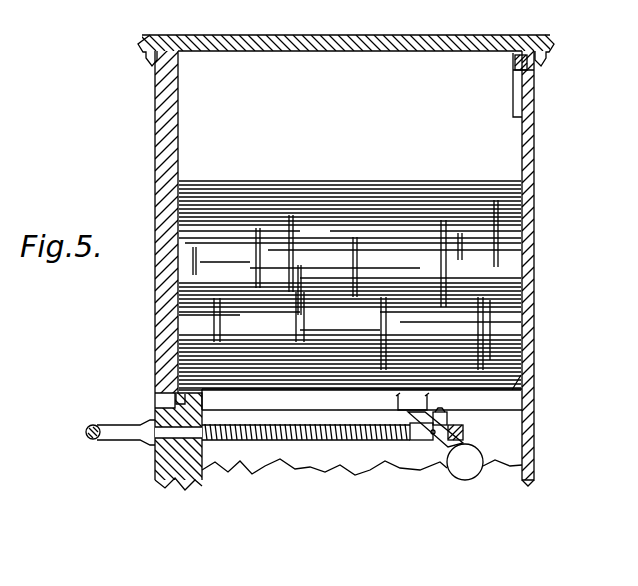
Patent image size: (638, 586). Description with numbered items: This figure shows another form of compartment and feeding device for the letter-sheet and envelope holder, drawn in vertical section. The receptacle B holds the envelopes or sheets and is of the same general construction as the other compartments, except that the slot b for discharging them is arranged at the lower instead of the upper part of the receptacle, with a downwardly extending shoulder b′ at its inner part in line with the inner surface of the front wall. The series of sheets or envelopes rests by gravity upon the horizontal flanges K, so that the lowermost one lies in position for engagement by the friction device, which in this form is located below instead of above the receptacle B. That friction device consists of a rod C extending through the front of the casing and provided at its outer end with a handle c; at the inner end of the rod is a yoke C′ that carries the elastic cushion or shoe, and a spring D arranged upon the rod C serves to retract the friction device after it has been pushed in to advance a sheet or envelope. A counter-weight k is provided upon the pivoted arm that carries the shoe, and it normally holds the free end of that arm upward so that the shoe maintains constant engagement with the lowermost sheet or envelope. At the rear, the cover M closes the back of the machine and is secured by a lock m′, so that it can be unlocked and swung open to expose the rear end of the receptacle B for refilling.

The receptacle B is at (346, 260).
The lock m′ is at (534, 90).
The cover M is at (534, 229).
The horizontal flanges K is at (362, 400).
The slot b is at (175, 400).
The shoulder b′ is at (205, 401).
The handle c is at (120, 438).
The rod C is at (317, 444).
The spring D is at (362, 457).
The pivot c′ is at (412, 417).
The yoke C′ is at (449, 429).
The counter-weight k is at (460, 468).